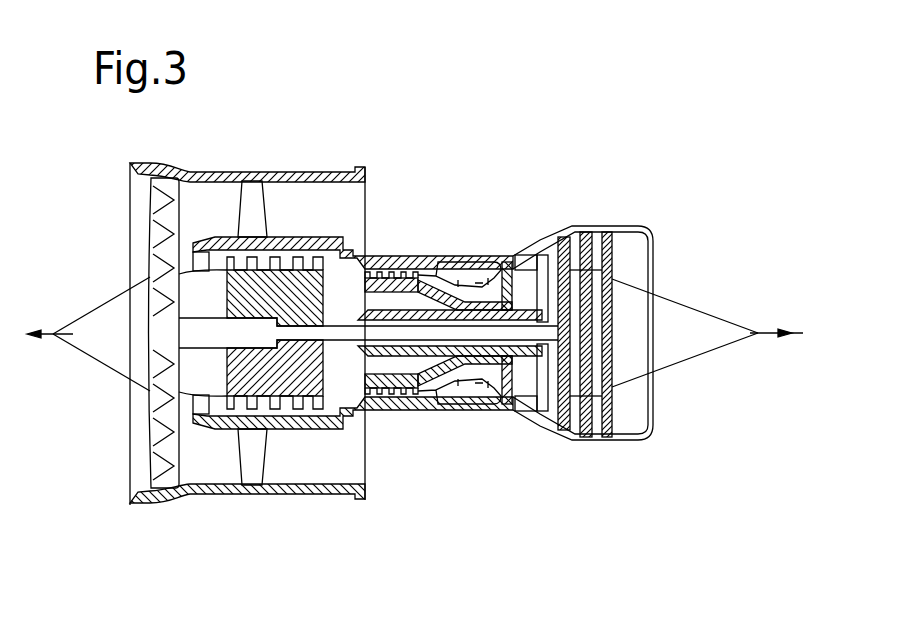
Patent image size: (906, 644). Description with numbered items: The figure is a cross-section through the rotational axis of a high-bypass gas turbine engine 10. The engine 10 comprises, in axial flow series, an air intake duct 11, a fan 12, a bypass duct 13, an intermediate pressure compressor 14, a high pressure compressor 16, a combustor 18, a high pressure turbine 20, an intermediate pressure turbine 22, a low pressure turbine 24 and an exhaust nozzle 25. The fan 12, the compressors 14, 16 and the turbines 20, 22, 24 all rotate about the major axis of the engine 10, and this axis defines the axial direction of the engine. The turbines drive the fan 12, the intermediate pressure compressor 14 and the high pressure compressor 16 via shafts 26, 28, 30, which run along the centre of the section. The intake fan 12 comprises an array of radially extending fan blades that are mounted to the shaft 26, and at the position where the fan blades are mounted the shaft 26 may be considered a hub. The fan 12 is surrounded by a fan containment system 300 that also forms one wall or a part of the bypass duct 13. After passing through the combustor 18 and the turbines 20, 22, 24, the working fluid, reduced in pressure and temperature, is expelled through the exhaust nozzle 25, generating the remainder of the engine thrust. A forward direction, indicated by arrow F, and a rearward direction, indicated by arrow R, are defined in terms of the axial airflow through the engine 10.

The bypass gas turbine engine 10 is at (464, 171).
The air intake duct 11 is at (140, 190).
The fan 12 is at (150, 238).
The bypass duct 13 is at (342, 214).
The intermediate pressure compressor 14 is at (227, 249).
The high pressure compressor 16 is at (417, 273).
The combustor 18 is at (470, 262).
The high pressure turbine 20 is at (507, 262).
The intermediate pressure turbine 22 is at (536, 247).
The low pressure turbine 24 is at (604, 238).
The exhaust nozzle 25 is at (636, 255).
The shaft 26 is at (207, 338).
The shaft 28 is at (416, 360).
The shaft 30 is at (486, 370).
The fan containment system 300 is at (181, 522).